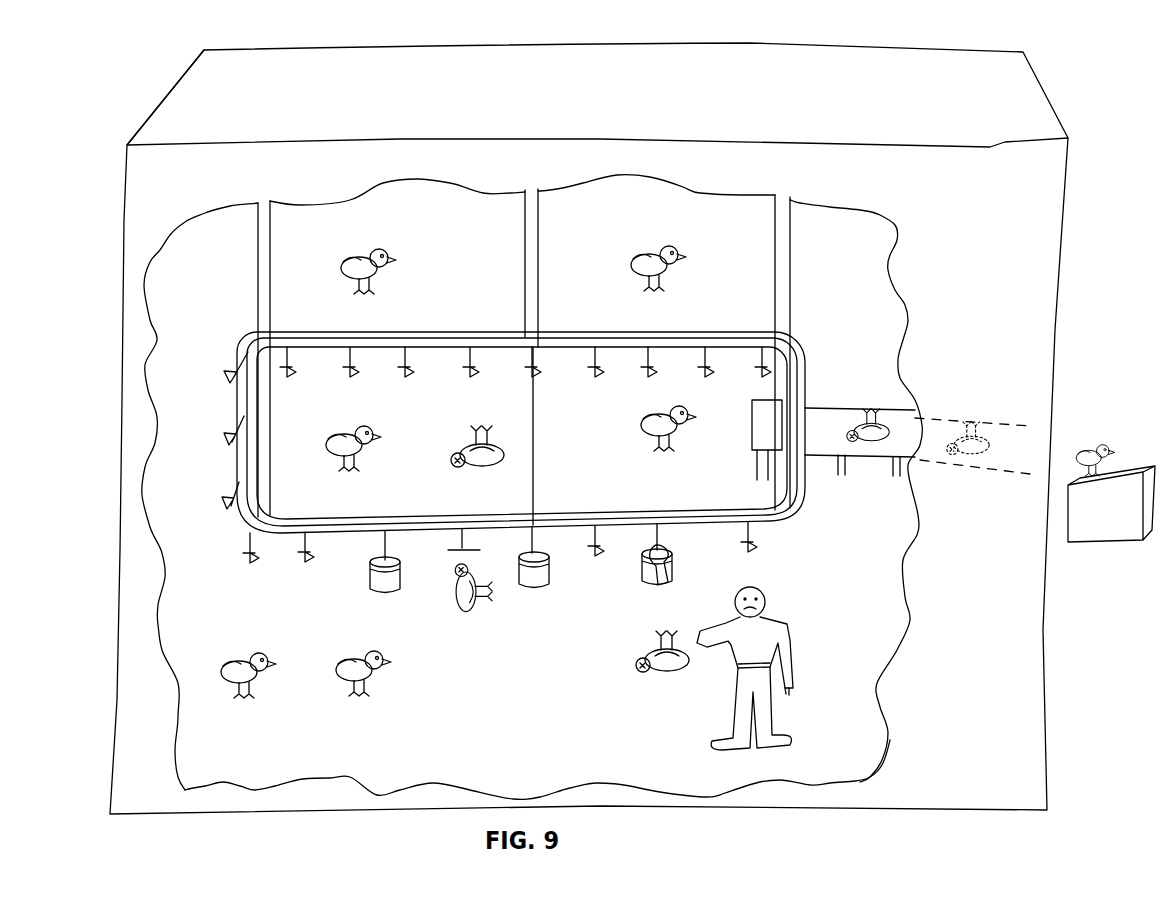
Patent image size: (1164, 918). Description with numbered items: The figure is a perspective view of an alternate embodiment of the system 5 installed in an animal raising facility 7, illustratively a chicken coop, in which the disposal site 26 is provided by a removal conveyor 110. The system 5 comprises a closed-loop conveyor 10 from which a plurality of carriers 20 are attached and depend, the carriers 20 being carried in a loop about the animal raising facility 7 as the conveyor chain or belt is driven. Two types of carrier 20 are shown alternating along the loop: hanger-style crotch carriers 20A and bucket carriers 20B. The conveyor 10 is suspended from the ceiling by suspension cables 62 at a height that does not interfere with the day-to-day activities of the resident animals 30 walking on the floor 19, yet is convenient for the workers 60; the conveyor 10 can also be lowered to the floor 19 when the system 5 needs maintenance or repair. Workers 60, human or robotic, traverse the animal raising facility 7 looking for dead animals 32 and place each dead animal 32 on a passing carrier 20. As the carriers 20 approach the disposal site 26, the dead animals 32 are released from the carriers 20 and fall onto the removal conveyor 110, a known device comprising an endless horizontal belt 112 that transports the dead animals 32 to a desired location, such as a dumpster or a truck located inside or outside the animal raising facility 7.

The system 5 is at (841, 288).
The animal raising facility 7 is at (1057, 254).
The conveyor 10 is at (242, 340).
The floor 19 is at (522, 744).
The carriers 20 is at (222, 438).
The crotch carrier 20A is at (247, 553).
The bucket carrier 20B is at (543, 588).
The disposal site 26 is at (1092, 540).
The resident animals 30 is at (378, 672).
The dead animals 32 is at (645, 660).
The workers 60 is at (782, 628).
The suspension cables 62 is at (270, 238).
The removal conveyor 110 is at (843, 410).
The endless horizontal belt 112 is at (1060, 447).